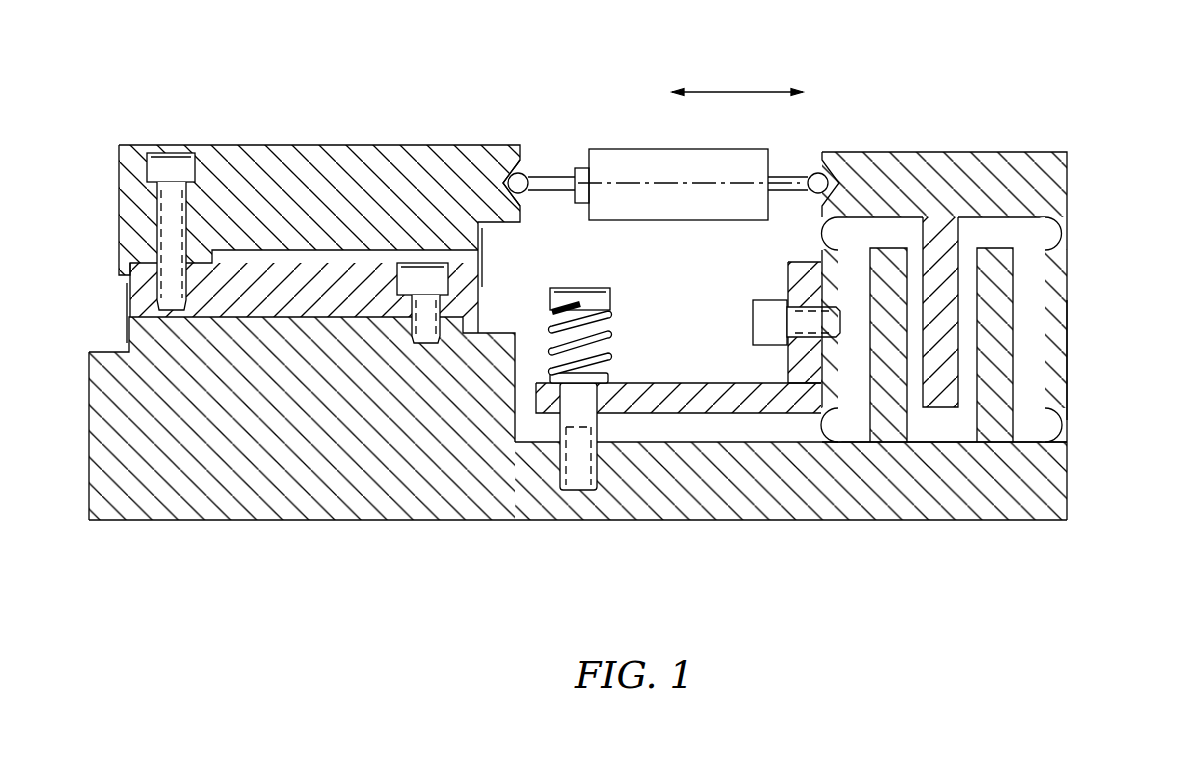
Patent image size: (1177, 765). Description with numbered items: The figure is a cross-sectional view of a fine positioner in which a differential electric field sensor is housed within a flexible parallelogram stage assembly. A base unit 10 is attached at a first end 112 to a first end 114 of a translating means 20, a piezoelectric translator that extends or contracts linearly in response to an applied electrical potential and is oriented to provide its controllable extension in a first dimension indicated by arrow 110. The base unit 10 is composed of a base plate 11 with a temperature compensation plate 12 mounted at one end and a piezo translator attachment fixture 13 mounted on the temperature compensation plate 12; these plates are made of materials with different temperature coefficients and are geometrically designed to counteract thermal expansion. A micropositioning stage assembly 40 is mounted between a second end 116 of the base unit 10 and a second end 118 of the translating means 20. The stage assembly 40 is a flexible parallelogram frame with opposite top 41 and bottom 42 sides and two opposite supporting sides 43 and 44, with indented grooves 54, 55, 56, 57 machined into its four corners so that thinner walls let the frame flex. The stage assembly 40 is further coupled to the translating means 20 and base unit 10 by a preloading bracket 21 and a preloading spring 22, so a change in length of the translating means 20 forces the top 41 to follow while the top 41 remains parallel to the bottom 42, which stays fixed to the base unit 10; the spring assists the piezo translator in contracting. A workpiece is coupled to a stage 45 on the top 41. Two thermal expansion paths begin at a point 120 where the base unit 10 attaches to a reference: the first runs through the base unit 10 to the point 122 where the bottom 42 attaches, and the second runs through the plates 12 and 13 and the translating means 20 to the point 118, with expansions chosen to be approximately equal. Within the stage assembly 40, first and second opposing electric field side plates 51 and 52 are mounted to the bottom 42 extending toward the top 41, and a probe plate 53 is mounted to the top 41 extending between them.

The base unit 10 is at (720, 503).
The base plate 11 is at (183, 450).
The temperature compensation plate 12 is at (238, 273).
The piezo translator attachment fixture 13 is at (287, 167).
The translating means 20 is at (647, 148).
The preloading bracket 21 is at (673, 407).
The preloading spring 22 is at (572, 300).
The micropositioning stage assembly 40 is at (1108, 197).
The top side 41 is at (1038, 152).
The bottom side 42 is at (1047, 488).
The supporting side 43 is at (821, 260).
The side flexure wall 44 is at (1067, 298).
The stage 45 is at (952, 152).
The first electric field side plate 51 is at (887, 430).
The second electric field side plate 52 is at (993, 430).
The probe plate 53 is at (942, 400).
The indented groove 54 is at (1062, 425).
The indented groove 55 is at (1060, 222).
The indented groove 56 is at (862, 248).
The indented groove 57 is at (862, 435).
The first dimension arrow 110 is at (732, 92).
The first end of base unit 112 is at (522, 149).
The first end of translating means 114 is at (528, 172).
The second end of base unit 116 is at (1067, 362).
The second end of translating means 118 is at (813, 173).
The attachment point 120 is at (443, 522).
The attachment point 122 is at (913, 520).